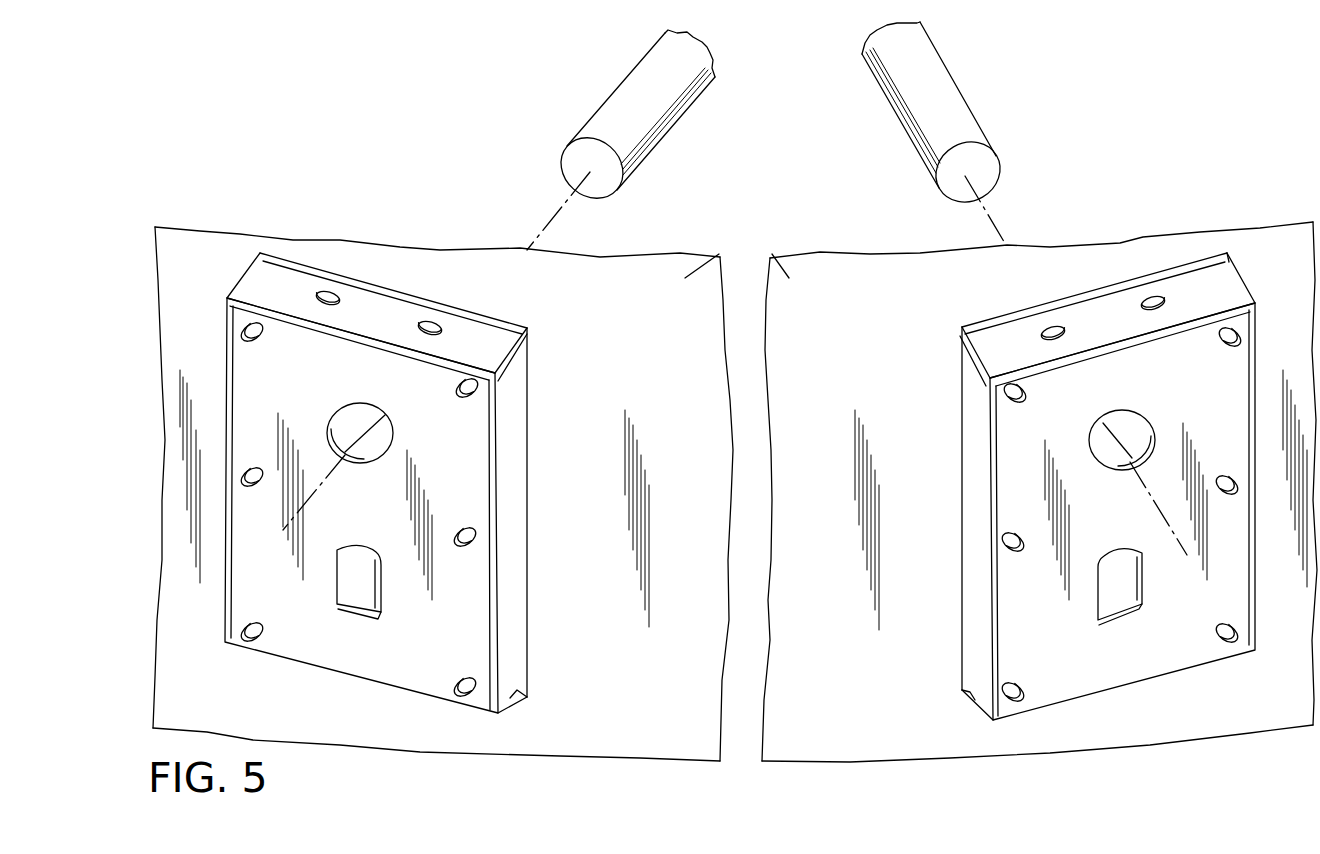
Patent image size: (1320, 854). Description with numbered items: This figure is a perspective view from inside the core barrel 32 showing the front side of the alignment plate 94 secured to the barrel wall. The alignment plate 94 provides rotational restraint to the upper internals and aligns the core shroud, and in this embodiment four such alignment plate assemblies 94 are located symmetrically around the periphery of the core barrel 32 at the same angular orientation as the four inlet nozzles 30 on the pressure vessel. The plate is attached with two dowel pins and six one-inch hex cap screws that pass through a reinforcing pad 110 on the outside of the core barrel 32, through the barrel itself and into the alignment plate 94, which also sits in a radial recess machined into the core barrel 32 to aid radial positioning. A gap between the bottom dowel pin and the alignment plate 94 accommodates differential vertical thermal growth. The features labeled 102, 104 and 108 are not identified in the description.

The inlet nozzle 30 is at (638, 102).
The core barrel 32 is at (770, 257).
The alignment plate 94 is at (740, 463).
The latch opening 102 is at (340, 605).
The bolt hole 104 is at (332, 430).
The fastener hole 108 is at (478, 393).
The reinforcing pad 110 is at (378, 526).